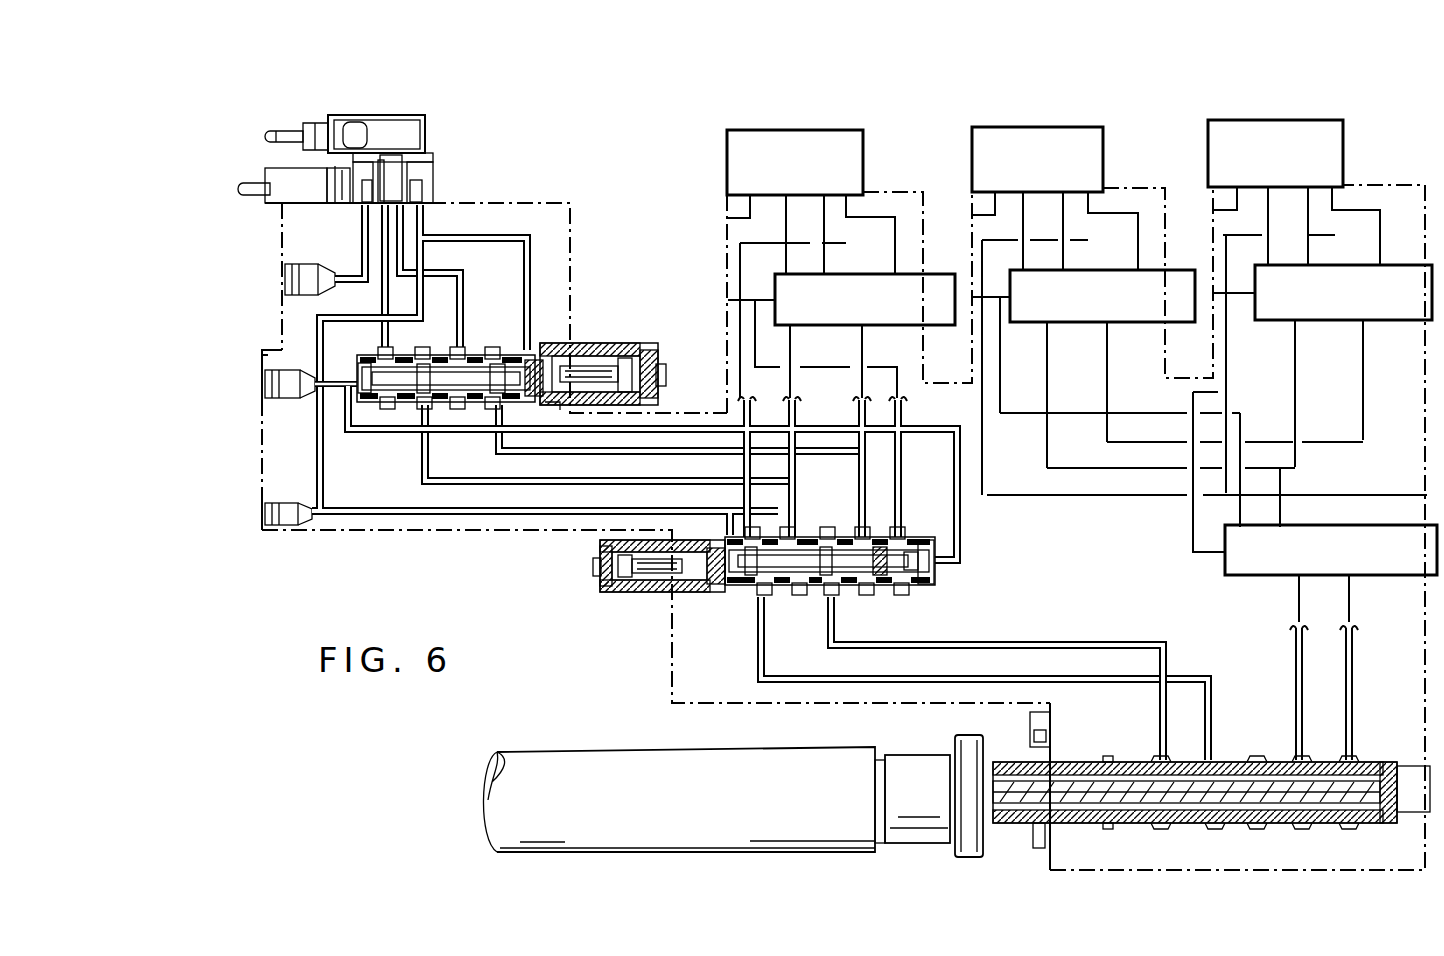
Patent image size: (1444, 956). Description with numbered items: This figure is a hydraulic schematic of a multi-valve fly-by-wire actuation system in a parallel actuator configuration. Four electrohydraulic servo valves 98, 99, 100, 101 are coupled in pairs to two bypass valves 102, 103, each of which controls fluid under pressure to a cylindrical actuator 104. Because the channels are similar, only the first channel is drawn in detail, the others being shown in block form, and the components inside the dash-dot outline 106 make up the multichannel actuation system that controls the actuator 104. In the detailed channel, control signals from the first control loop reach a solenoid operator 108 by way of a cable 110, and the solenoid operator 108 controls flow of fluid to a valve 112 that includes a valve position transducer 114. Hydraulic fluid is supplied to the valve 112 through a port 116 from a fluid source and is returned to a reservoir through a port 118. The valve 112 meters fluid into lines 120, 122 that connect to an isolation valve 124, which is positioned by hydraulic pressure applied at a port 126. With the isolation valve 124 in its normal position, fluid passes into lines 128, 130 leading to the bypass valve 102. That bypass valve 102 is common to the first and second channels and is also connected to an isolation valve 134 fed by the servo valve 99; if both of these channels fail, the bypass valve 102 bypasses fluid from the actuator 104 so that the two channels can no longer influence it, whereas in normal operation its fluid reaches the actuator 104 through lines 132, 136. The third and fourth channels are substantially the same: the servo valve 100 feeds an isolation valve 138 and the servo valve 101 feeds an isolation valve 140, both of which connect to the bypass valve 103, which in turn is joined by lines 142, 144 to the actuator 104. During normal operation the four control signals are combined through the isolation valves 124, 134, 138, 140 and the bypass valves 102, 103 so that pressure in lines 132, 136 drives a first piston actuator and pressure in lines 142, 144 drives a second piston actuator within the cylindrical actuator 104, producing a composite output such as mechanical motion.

The electrohydraulic servo valve 98 is at (368, 149).
The electrohydraulic servo valve 99 is at (782, 174).
The electrohydraulic servo valve 100 is at (1018, 170).
The electrohydraulic servo valve 101 is at (1257, 164).
The bypass valve 102 is at (936, 572).
The bypass valve 103 is at (1313, 562).
The cylindrical actuator 104 is at (598, 752).
The dash-dot outline 106 is at (430, 531).
The solenoid operator 108 is at (332, 113).
The cable 110 is at (270, 134).
The valve 112 is at (436, 186).
The valve position transducer 114 is at (276, 172).
The port 116 is at (283, 283).
The port 118 is at (265, 514).
The line 120 is at (381, 287).
The line 122 is at (468, 322).
The isolation valve 124 is at (600, 345).
The port 126 is at (264, 384).
The line 128 is at (420, 453).
The line 130 is at (498, 457).
The line 132 is at (757, 640).
The isolation valve 134 is at (847, 312).
The line 136 is at (858, 641).
The isolation valve 138 is at (1084, 309).
The isolation valve 140 is at (1325, 305).
The line 142 is at (1297, 656).
The line 144 is at (1357, 660).